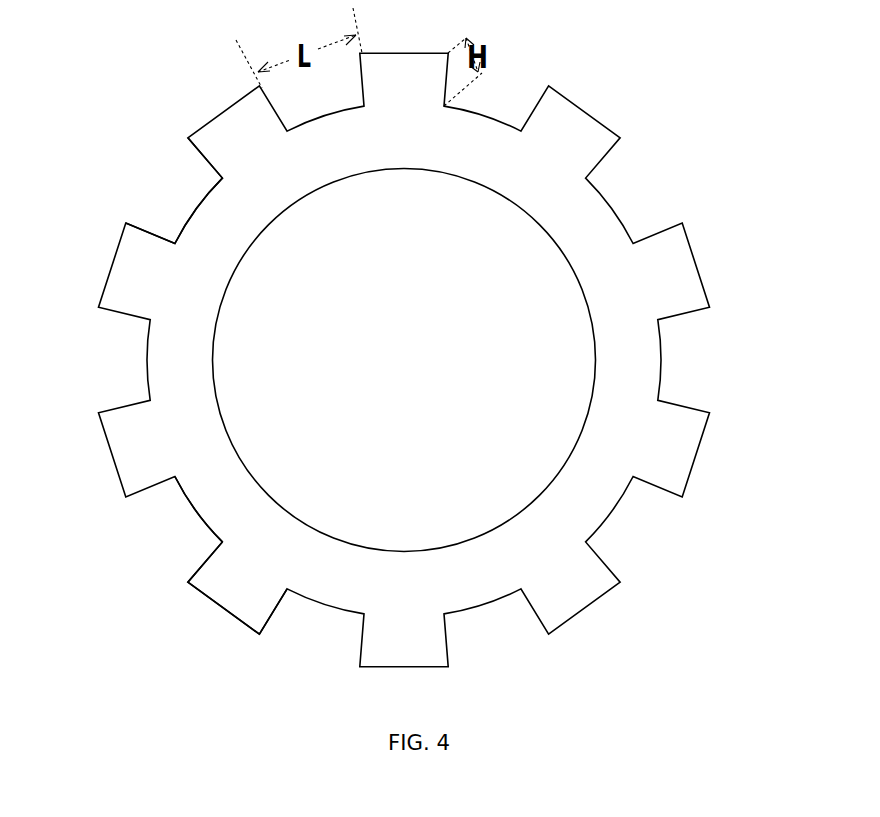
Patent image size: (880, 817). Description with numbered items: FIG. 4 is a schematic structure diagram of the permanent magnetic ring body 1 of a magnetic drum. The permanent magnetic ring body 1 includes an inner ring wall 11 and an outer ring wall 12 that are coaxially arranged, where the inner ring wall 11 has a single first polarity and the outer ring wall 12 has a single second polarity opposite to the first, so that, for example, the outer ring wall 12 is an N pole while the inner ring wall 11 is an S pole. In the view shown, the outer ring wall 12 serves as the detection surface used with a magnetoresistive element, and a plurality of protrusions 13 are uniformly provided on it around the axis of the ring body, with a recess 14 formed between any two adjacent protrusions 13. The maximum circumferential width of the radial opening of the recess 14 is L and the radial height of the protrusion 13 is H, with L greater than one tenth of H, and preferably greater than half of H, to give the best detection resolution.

The permanent magnetic ring body 1 is at (633, 162).
The inner ring wall 11 is at (245, 253).
The outer ring wall 12 is at (187, 210).
The protrusion 13 is at (238, 588).
The recess 14 is at (168, 525).